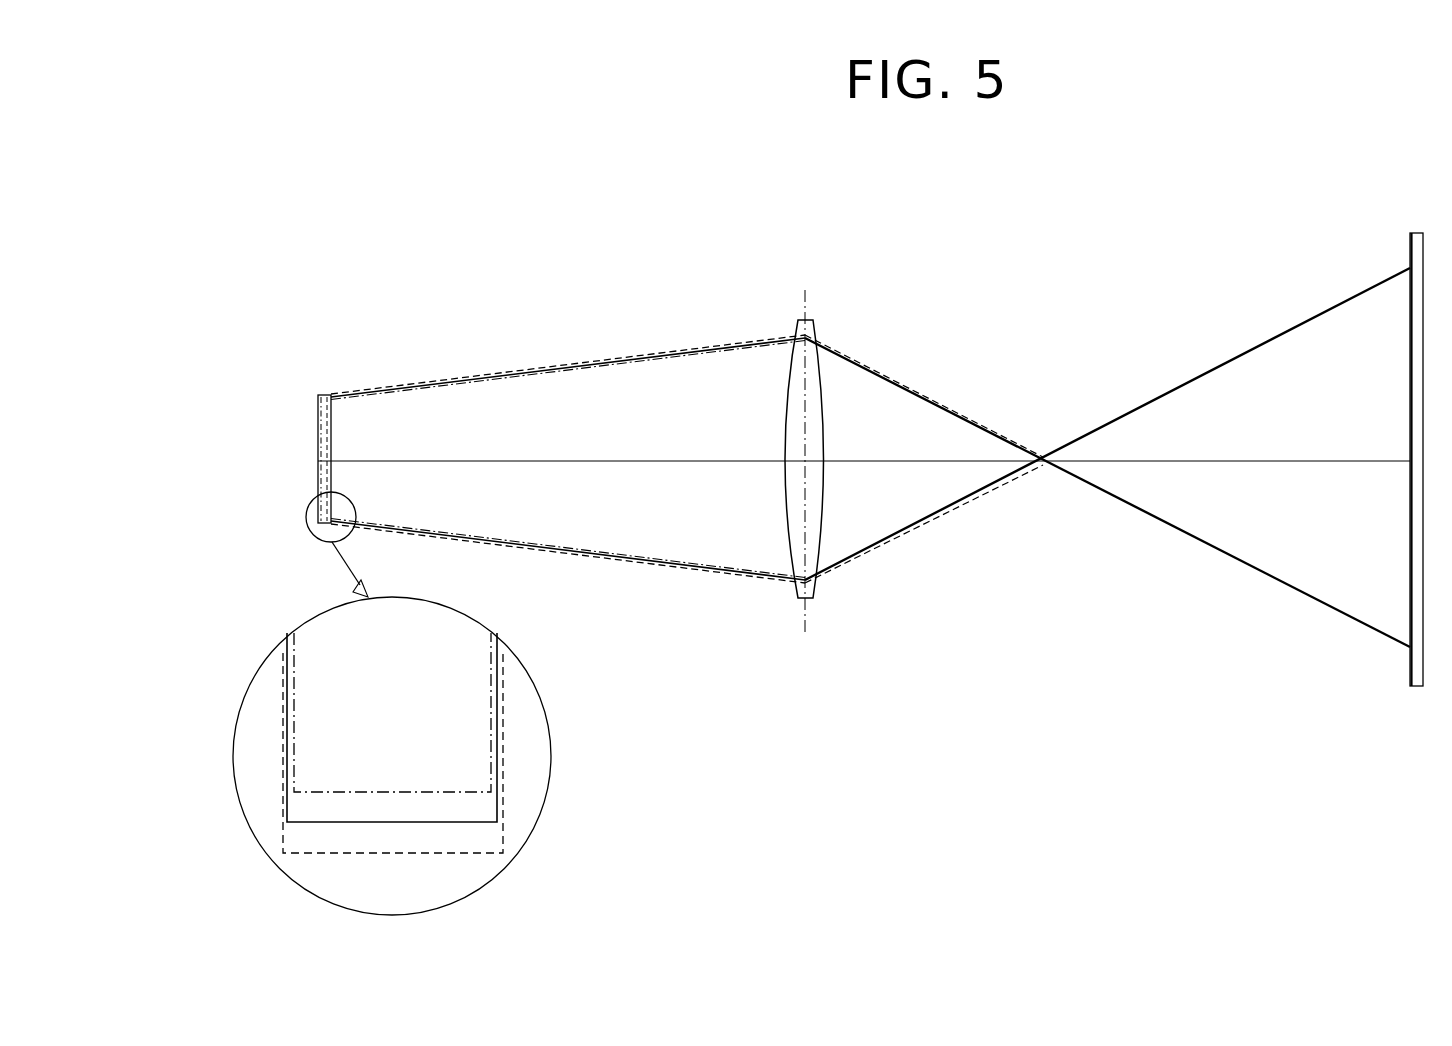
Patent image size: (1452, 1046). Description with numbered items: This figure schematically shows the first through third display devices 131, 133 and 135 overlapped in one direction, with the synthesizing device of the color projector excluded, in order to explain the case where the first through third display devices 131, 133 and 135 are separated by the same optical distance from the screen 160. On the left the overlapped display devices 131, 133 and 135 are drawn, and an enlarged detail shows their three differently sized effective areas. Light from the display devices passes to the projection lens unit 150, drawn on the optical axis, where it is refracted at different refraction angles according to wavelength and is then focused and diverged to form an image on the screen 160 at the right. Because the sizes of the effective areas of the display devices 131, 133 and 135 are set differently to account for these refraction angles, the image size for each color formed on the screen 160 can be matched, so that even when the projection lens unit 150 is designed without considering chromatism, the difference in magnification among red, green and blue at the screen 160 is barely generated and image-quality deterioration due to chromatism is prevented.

The first display device 131 is at (312, 840).
The second display device 133 is at (312, 803).
The third display device 135 is at (305, 712).
The projection lens unit 150 is at (826, 311).
The screen 160 is at (1404, 238).